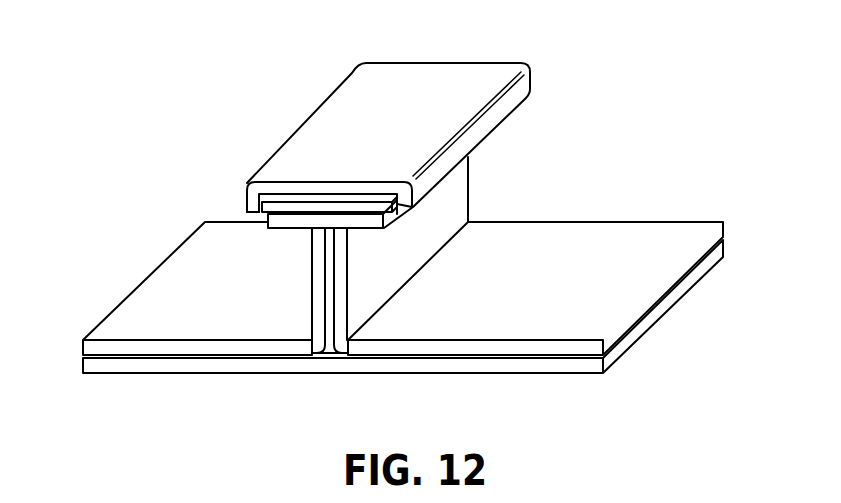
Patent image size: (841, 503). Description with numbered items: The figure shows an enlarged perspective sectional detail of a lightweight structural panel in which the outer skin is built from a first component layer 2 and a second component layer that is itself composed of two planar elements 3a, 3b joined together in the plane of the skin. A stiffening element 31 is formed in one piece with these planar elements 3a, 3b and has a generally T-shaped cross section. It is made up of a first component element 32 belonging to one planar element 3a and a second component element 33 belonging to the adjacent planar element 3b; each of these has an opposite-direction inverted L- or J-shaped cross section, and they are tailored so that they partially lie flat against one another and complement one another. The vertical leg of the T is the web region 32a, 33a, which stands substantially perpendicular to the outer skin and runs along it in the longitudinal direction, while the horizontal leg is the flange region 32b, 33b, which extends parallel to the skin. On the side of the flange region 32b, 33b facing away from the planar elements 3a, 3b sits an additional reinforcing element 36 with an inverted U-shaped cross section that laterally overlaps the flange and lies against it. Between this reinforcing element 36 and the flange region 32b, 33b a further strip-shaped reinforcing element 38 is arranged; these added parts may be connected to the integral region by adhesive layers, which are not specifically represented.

The first component layer 2 is at (527, 367).
The planar element 3a is at (682, 235).
The planar element 3b is at (228, 228).
The stiffening element 31 is at (574, 91).
The first component element 32 is at (437, 174).
The web region 32a is at (442, 220).
The flange region 32b is at (413, 178).
The second component element 33 is at (234, 240).
The web region 33a is at (313, 300).
The flange region 33b is at (307, 227).
The reinforcing element 36 is at (463, 73).
The further reinforcing element 38 is at (323, 207).